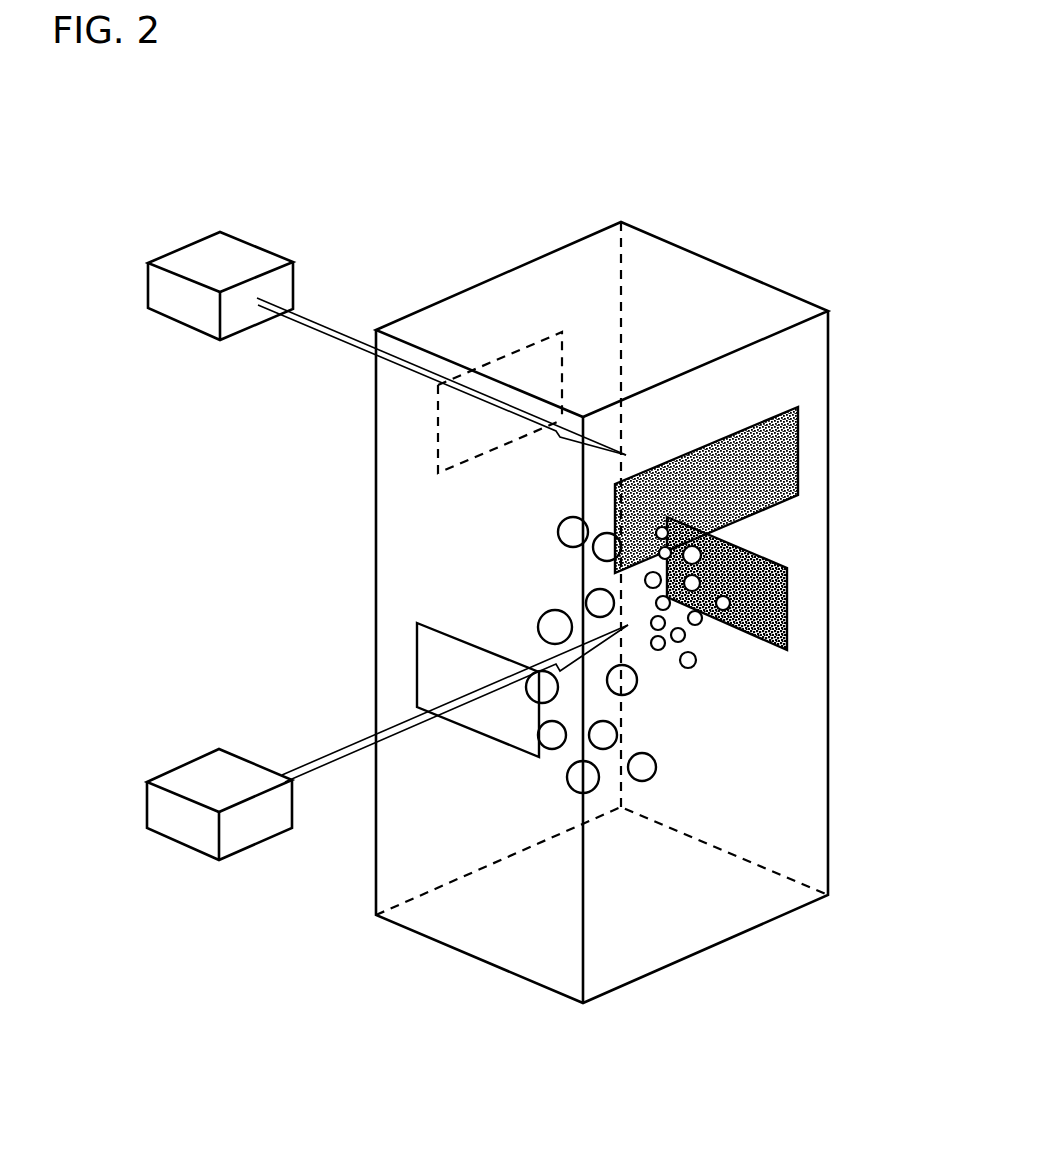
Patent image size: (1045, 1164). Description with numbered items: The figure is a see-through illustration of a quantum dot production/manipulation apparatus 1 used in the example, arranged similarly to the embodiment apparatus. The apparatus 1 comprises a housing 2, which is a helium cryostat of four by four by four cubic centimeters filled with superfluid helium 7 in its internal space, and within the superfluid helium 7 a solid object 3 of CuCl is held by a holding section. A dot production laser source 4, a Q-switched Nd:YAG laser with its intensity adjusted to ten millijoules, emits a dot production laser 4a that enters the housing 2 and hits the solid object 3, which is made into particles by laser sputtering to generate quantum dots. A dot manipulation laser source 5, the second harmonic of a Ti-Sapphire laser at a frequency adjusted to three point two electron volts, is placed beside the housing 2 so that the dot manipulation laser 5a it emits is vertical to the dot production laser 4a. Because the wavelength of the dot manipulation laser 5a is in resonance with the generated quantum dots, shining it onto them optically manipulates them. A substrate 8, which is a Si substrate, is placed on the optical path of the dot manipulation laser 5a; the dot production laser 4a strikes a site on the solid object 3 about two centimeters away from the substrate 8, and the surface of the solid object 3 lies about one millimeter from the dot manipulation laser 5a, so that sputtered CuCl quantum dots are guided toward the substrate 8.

The quantum dot production/manipulation apparatus 1 is at (821, 205).
The housing 2 is at (827, 787).
The solid object 3 is at (798, 451).
The dot production laser source 4 is at (190, 252).
The dot production laser 4a is at (341, 332).
The dot manipulation laser source 5 is at (189, 775).
The dot manipulation laser 5a is at (318, 760).
The superfluid helium 7 is at (397, 513).
The substrate 8 is at (787, 612).